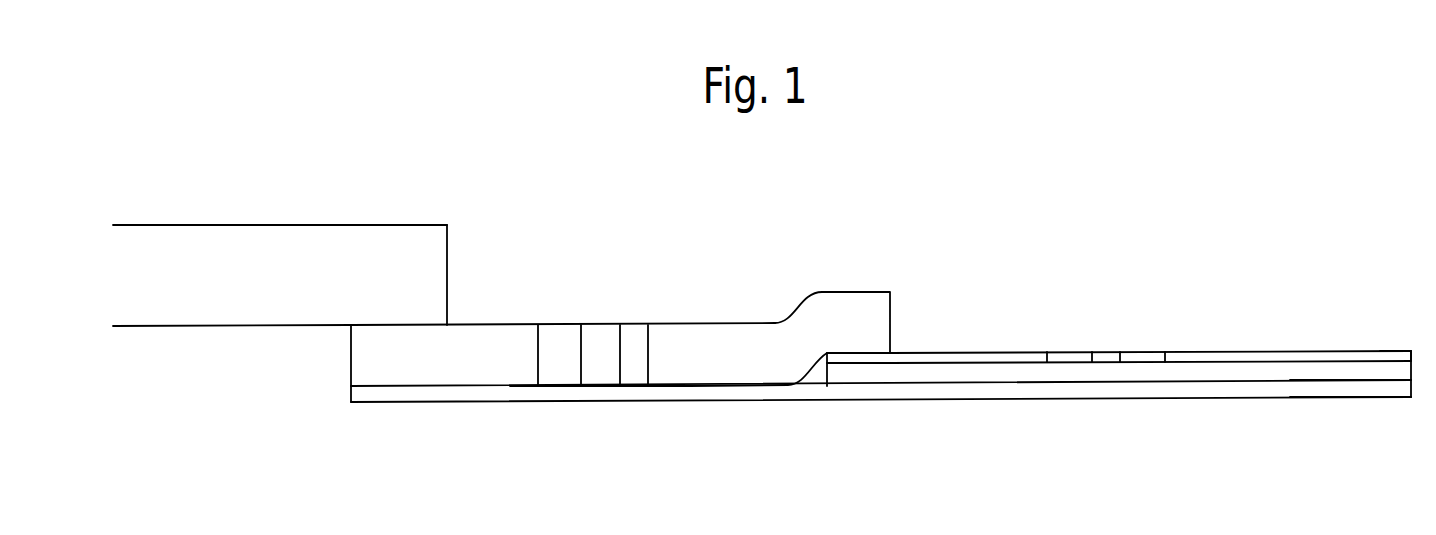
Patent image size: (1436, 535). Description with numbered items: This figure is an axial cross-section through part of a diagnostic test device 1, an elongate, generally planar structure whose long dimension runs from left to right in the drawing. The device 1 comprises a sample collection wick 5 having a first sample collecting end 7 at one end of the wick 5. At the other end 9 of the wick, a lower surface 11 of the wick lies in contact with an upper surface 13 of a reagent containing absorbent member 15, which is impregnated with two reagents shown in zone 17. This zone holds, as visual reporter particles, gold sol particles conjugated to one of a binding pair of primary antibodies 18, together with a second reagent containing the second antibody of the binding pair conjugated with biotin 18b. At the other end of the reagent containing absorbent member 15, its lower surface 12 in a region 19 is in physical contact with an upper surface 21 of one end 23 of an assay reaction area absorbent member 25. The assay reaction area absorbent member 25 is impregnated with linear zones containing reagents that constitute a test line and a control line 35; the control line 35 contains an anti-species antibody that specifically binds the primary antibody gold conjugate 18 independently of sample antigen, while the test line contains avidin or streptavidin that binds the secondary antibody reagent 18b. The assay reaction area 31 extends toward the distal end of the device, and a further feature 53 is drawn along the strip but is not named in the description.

The diagnostic test device 1 is at (1065, 213).
The sample collection wick 5 is at (263, 255).
The first sample collecting end 7 is at (128, 255).
The other end of the wick 9 is at (390, 250).
The lower surface of the wick 11 is at (368, 306).
The lower surface of the reagent containing absorbent member 12 is at (845, 348).
The upper surface of the reagent containing absorbent member 13 is at (398, 322).
The reagent containing absorbent member 15 is at (722, 357).
The reagent zone 17 is at (685, 425).
The primary antibodies conjugated to gold sol particles 18 is at (553, 322).
The secondary antibody reagent conjugated with biotin 18b is at (633, 322).
The contact region 19 is at (848, 305).
The upper surface of the assay reaction area absorbent member 21 is at (880, 353).
The end of the assay reaction area absorbent member 23 is at (952, 360).
The assay reaction area absorbent member 25 is at (1303, 352).
The assay reaction area 31 is at (1403, 355).
The control line 35 is at (1158, 360).
The element 53 is at (1055, 360).